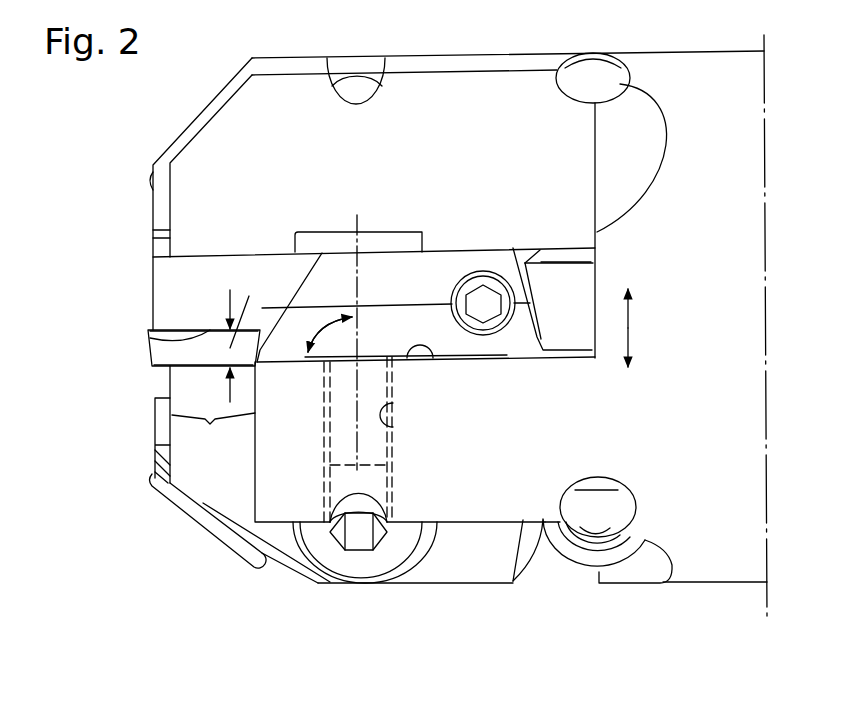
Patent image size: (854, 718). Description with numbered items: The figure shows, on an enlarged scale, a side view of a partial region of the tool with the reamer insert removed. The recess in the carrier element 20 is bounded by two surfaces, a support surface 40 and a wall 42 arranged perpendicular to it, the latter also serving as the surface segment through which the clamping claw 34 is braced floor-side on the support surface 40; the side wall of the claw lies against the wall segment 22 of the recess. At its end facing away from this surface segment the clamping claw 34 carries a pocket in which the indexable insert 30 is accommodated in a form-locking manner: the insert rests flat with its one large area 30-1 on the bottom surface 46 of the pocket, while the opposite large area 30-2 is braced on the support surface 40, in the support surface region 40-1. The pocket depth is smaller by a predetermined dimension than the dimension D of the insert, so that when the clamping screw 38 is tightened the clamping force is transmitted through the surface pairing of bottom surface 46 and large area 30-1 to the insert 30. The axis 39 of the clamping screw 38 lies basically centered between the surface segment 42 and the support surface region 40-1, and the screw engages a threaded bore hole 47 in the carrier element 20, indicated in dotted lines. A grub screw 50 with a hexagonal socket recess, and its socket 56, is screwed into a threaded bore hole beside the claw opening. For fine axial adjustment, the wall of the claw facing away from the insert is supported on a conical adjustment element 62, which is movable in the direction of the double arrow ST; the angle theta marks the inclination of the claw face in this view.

The carrier element 20 is at (716, 375).
The wall segment 22 is at (369, 155).
The clamping screw 38 is at (304, 239).
The clamping claw 34 is at (437, 266).
The wall / surface segment 42 is at (523, 362).
The conical adjustment element 62 is at (567, 290).
The grub screw 50 is at (473, 283).
The hexagon socket 56 is at (490, 298).
The indexable insert 30 is at (177, 355).
The large area of the indexable insert 30-1 is at (193, 328).
The opposite large area of the indexable insert 30-2 is at (160, 370).
The bottom surface of the pocket 46 is at (150, 338).
The support surface 40 is at (438, 360).
The support surface region 40-1 is at (213, 435).
The axis of the clamping screw 39 is at (393, 458).
The threaded bore hole 47 is at (393, 422).
The dimension of the indexable insert D is at (248, 335).
The clamping angle theta is at (309, 351).
The double arrow ST is at (629, 325).